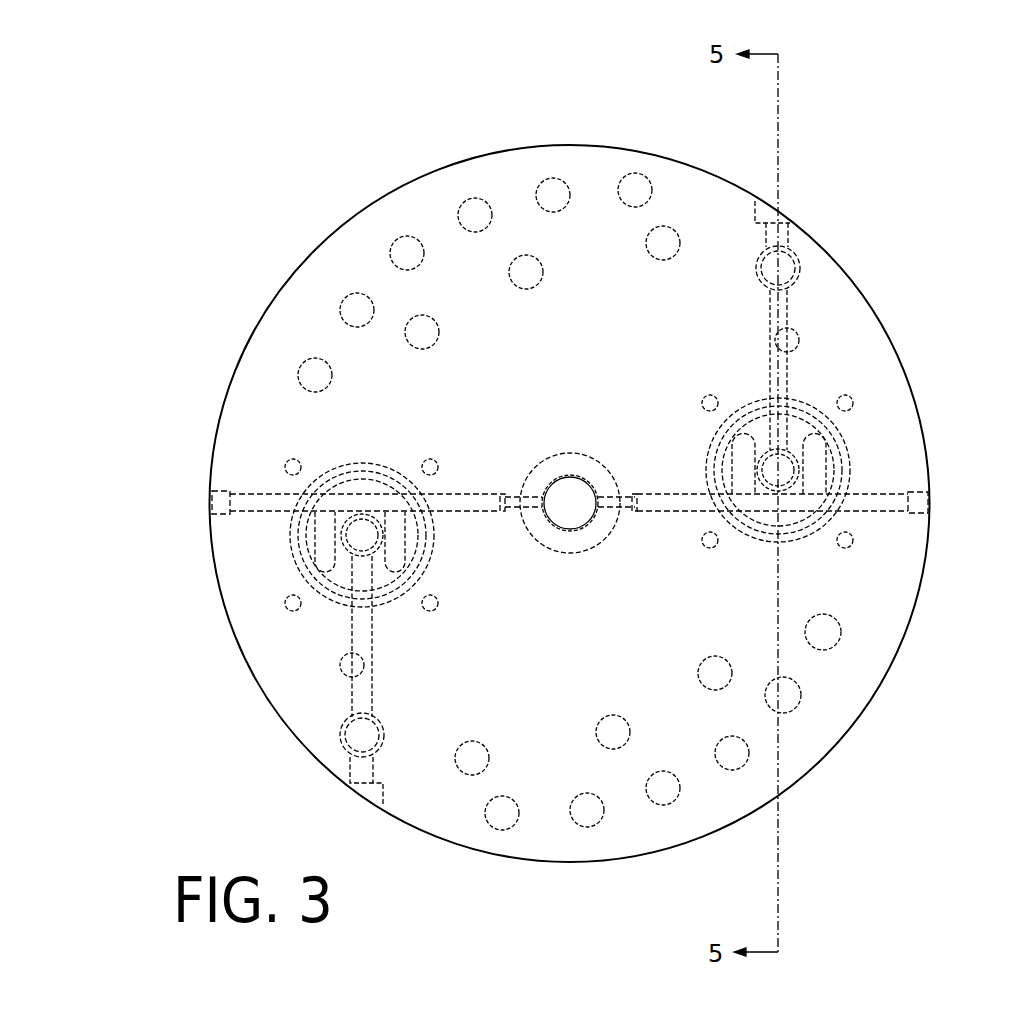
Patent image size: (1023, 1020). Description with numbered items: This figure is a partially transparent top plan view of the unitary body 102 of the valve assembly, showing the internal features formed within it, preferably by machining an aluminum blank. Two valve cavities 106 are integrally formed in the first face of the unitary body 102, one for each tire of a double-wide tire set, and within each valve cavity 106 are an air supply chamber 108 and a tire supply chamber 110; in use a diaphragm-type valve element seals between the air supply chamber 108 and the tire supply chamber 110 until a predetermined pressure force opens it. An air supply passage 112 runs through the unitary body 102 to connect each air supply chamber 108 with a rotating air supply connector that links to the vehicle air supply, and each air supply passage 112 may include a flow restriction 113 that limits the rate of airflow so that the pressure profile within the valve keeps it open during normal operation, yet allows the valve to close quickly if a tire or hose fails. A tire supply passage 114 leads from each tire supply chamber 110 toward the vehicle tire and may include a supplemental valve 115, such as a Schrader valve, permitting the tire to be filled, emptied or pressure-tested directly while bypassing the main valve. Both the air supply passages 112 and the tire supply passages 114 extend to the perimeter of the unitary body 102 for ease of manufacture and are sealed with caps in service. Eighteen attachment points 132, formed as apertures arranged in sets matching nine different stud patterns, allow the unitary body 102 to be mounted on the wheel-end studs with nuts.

The unitary body 102 is at (815, 167).
The valve cavity 106 is at (303, 517).
The air supply chamber 108 is at (310, 533).
The tire supply chamber 110 is at (357, 537).
The air supply passage 112 is at (487, 510).
The flow restriction 113 is at (623, 497).
The tire supply passage 114 is at (357, 627).
The supplemental valve 115 is at (350, 665).
The attachment points 132 is at (422, 327).